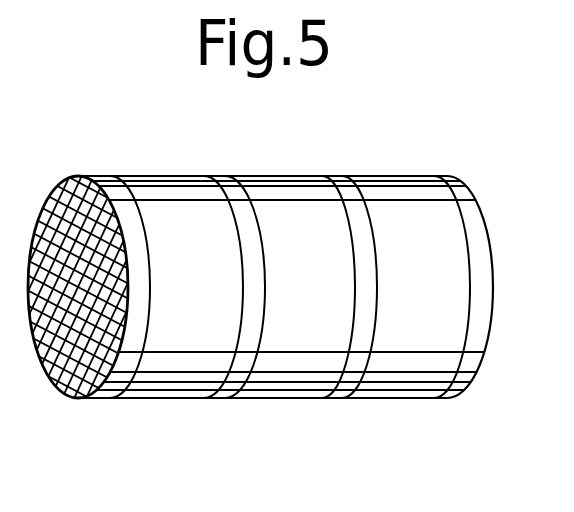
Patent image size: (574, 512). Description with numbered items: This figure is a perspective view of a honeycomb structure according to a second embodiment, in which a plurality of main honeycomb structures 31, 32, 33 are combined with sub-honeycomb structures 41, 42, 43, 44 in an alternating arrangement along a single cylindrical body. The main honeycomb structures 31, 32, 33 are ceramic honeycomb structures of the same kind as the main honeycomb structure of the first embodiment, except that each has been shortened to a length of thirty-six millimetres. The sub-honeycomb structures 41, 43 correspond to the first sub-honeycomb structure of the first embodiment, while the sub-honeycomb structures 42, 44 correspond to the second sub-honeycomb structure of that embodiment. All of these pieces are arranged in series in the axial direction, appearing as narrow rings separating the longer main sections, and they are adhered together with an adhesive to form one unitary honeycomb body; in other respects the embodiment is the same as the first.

The main honeycomb structure 31 is at (169, 213).
The main honeycomb structure 32 is at (291, 213).
The main honeycomb structure 33 is at (400, 213).
The sub-honeycomb structure 41 is at (125, 367).
The sub-honeycomb structure 42 is at (237, 378).
The sub-honeycomb structure 43 is at (352, 367).
The sub-honeycomb structure 44 is at (457, 380).